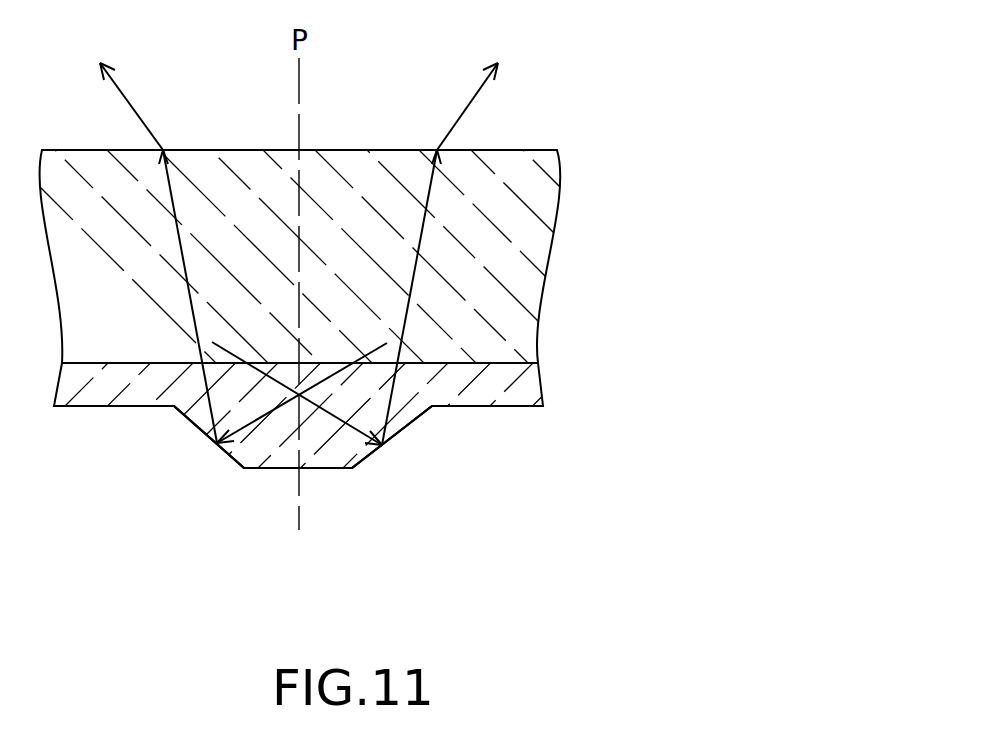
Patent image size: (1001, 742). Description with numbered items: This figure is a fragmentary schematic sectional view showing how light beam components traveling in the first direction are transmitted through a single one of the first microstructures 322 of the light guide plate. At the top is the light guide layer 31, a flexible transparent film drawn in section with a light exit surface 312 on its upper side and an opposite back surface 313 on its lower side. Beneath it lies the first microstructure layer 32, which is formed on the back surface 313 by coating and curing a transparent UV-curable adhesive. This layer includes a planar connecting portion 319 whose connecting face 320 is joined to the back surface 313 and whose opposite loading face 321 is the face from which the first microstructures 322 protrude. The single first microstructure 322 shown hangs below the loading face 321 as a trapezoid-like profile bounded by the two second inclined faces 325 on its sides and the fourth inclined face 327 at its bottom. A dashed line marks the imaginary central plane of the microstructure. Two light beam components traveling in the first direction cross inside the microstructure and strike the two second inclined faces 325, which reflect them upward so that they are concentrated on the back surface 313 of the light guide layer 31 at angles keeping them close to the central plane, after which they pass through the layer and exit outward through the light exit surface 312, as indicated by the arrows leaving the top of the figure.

The light guide layer 31 is at (578, 213).
The light exit surface 312 is at (507, 150).
The back surface 313 is at (503, 363).
The first microstructure layer 32 is at (463, 437).
The connecting face 320 is at (522, 365).
The planar connecting portion 319 is at (493, 382).
The loading face 321 is at (498, 408).
The first microstructure 322 is at (359, 492).
The second inclined face 325 is at (206, 432).
The fourth inclined face 327 is at (262, 470).